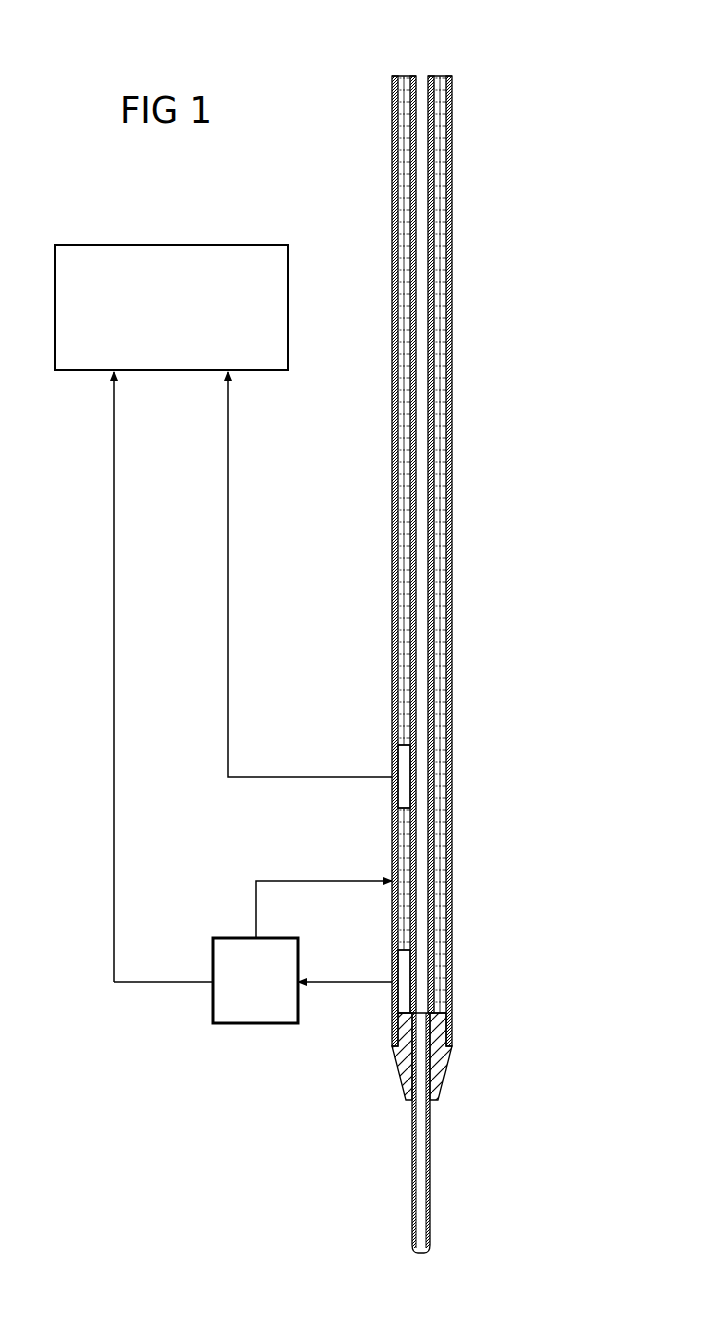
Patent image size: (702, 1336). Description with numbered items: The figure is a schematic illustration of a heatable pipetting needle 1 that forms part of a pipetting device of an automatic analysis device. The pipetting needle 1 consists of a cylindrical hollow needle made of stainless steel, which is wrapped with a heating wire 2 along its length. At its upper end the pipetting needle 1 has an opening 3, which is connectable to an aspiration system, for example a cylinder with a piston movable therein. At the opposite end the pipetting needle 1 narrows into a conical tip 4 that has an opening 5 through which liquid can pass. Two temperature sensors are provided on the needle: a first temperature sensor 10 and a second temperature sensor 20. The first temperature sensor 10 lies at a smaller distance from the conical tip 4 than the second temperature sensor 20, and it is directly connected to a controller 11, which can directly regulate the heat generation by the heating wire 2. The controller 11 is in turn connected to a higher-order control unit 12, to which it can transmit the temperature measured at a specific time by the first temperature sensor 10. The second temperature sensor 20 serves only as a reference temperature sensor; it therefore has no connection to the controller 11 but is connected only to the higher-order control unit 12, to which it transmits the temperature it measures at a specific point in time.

The pipetting needle 1 is at (442, 645).
The heating wire 2 is at (440, 330).
The opening 3 is at (422, 92).
The conical tip 4 is at (405, 1070).
The opening 5 is at (418, 1253).
The first temperature sensor 10 is at (400, 1000).
The controller 11 is at (259, 1025).
The higher-order control unit 12 is at (172, 372).
The second temperature sensor 20 is at (400, 797).